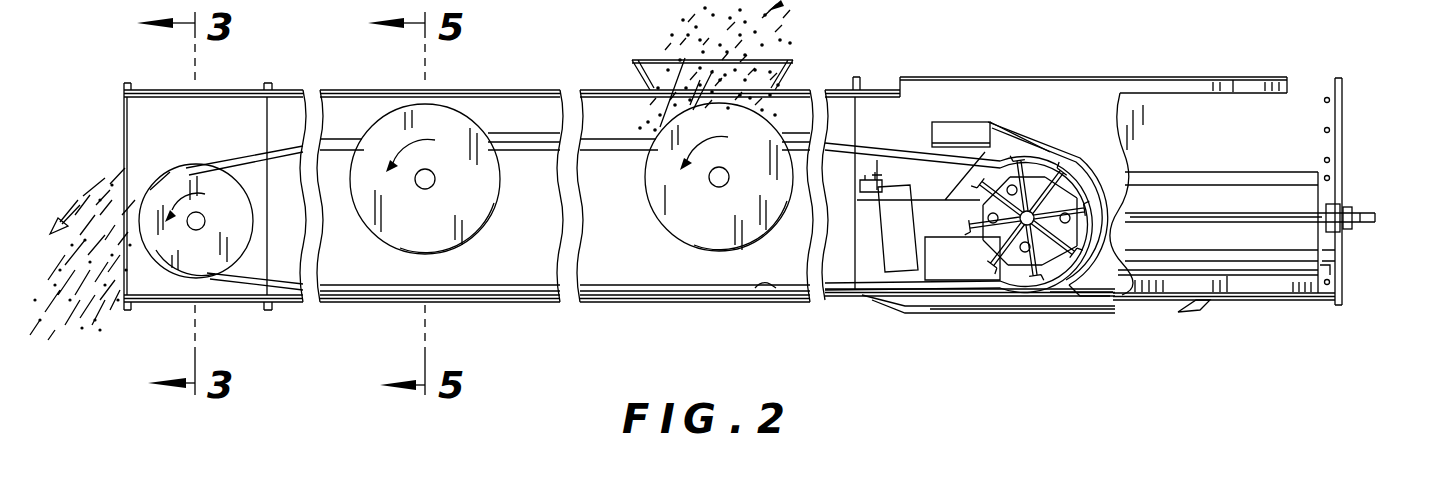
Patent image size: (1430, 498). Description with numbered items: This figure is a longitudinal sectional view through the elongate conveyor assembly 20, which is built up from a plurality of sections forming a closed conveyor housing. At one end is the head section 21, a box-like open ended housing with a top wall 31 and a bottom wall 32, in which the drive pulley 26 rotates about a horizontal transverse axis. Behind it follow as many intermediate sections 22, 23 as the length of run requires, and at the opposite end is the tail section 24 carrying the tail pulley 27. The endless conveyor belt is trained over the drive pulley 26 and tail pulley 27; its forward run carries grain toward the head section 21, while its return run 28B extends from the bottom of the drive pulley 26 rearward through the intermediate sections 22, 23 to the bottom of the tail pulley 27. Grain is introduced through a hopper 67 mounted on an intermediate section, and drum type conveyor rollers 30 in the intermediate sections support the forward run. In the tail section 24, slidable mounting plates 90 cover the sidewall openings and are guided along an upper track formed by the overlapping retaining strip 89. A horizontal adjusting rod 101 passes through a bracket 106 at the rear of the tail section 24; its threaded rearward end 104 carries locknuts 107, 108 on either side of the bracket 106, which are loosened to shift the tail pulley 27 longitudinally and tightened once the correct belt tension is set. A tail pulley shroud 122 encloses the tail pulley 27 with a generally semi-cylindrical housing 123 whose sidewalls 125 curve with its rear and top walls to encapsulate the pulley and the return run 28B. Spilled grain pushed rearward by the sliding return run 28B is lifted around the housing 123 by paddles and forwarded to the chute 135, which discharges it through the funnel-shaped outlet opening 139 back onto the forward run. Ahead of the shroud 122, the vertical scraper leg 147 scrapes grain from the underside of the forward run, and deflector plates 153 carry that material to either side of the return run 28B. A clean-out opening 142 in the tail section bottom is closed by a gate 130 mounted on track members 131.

The conveyor assembly 20 is at (918, 68).
The head section 21 is at (229, 115).
The intermediate section 22 is at (481, 108).
The intermediate section 23 is at (640, 272).
The tail section 24 is at (1100, 95).
The drive pulley 26 is at (243, 216).
The tail pulley 27 is at (965, 266).
The return run 28B is at (762, 288).
The conveyor roller 30 is at (478, 198).
The top wall 31 is at (153, 88).
The bottom wall 32 is at (170, 302).
The hopper 67 is at (632, 72).
The retaining strip 89 is at (1170, 183).
The mounting plate 90 is at (1224, 200).
The adjusting rod 101 is at (1270, 213).
The rearward end 104 is at (1365, 228).
The bracket 106 is at (1322, 170).
The locknut 107 is at (1340, 205).
The locknut 108 is at (1348, 205).
The tail pulley shroud 122 is at (1102, 158).
The semi-cylindrical housing 123 is at (1072, 303).
The sidewall 125 is at (1005, 272).
The gate 130 is at (1157, 305).
The track member 131 is at (1200, 308).
The chute 135 is at (985, 113).
The outlet opening 139 is at (938, 138).
The clean-out opening 142 is at (985, 298).
The scraper leg 147 is at (882, 166).
The deflector plate 153 is at (900, 258).